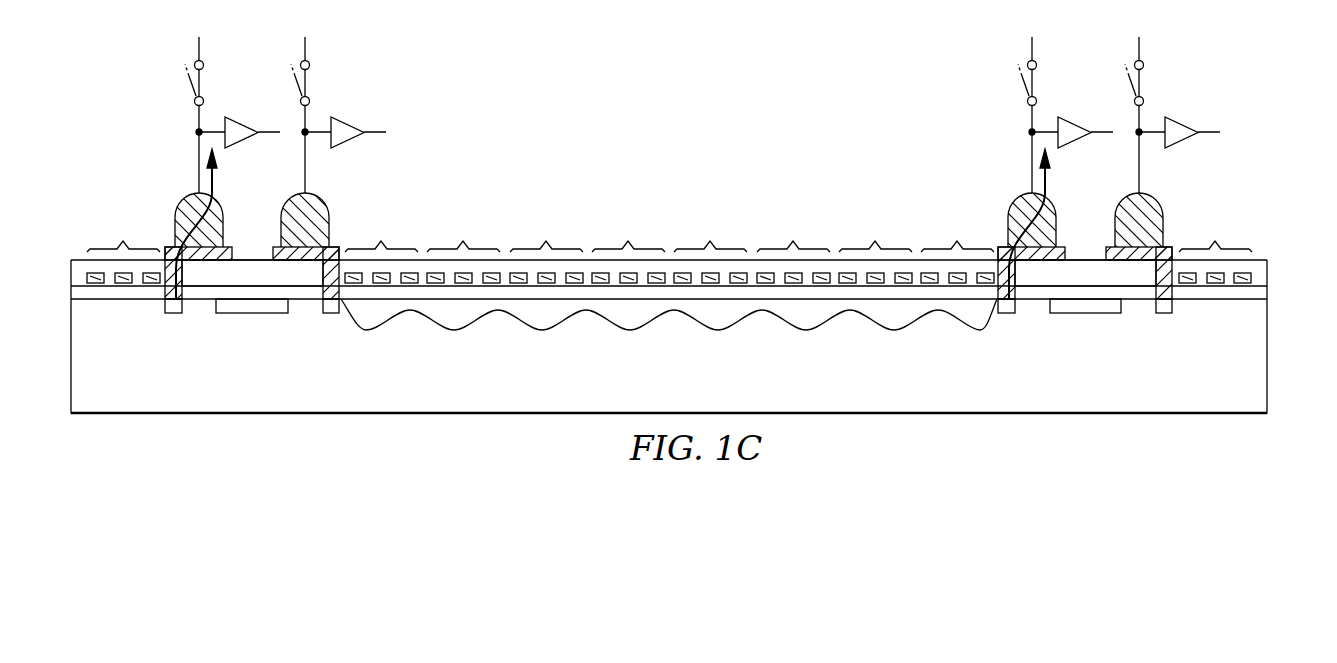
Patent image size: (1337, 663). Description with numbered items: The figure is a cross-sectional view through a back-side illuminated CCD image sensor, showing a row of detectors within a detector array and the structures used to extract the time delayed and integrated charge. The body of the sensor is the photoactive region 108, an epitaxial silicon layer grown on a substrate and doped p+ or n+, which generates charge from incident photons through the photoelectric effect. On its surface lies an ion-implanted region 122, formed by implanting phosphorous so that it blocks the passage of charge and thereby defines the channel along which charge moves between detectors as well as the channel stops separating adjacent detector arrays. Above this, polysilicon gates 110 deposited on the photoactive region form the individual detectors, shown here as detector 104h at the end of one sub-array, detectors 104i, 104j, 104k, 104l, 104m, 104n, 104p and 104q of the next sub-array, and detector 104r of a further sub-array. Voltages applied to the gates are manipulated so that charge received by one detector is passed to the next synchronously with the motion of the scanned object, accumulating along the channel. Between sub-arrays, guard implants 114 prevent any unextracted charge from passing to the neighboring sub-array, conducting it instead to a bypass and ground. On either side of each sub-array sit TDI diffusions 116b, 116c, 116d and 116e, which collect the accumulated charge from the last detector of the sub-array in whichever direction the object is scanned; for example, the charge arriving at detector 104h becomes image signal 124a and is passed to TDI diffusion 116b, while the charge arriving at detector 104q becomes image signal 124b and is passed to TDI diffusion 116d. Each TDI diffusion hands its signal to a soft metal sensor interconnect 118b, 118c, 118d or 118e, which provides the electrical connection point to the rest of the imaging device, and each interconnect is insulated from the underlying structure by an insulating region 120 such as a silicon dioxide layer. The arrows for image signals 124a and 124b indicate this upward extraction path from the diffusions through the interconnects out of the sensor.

The detector 104h is at (123, 248).
The detector 104i is at (381, 248).
The detector 104j is at (463, 248).
The detector 104k is at (546, 248).
The detector 104l is at (628, 248).
The detector 104m is at (710, 248).
The detector 104n is at (793, 248).
The detector 104p is at (875, 248).
The detector 104q is at (957, 248).
The detector 104r is at (1215, 248).
The photoactive region 108 is at (1257, 357).
The gates 110 is at (1257, 279).
The guard implants 114 is at (250, 315).
The TDI diffusion 116b is at (165, 304).
The TDI diffusion 116c is at (333, 315).
The TDI diffusion 116d is at (1007, 314).
The TDI diffusion 116e is at (1166, 315).
The sensor interconnect 118b is at (178, 200).
The sensor interconnect 118c is at (325, 200).
The sensor interconnect 118d is at (1011, 200).
The sensor interconnect 118e is at (1160, 200).
The insulating region 120 is at (257, 268).
The ion-implanted region 122 is at (1257, 294).
The image signal 124a is at (216, 178).
The image signal 124b is at (1049, 178).